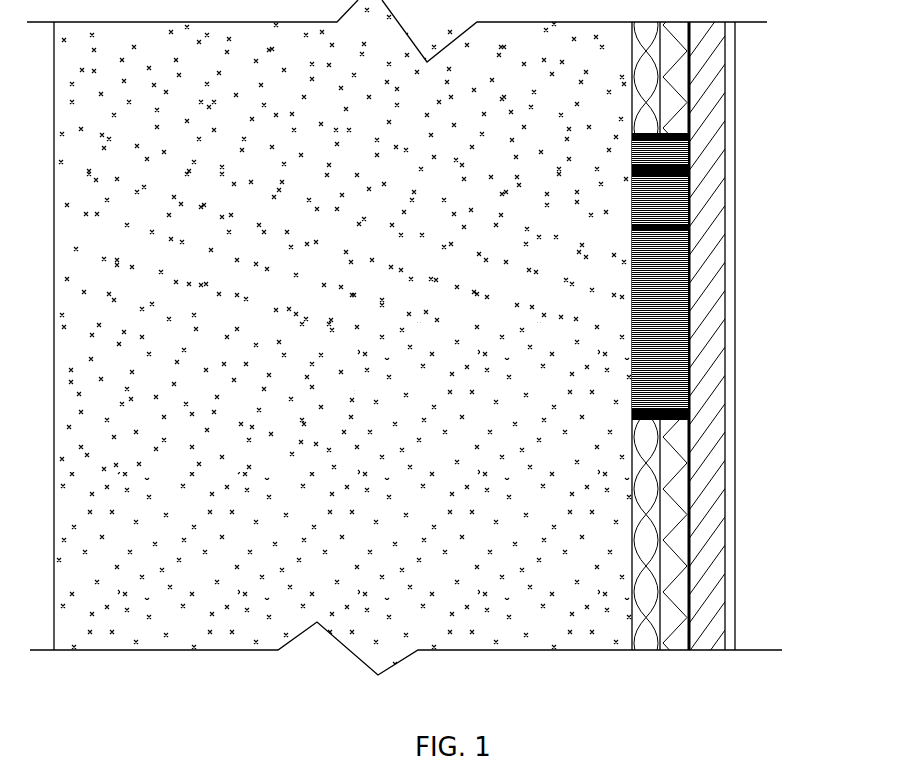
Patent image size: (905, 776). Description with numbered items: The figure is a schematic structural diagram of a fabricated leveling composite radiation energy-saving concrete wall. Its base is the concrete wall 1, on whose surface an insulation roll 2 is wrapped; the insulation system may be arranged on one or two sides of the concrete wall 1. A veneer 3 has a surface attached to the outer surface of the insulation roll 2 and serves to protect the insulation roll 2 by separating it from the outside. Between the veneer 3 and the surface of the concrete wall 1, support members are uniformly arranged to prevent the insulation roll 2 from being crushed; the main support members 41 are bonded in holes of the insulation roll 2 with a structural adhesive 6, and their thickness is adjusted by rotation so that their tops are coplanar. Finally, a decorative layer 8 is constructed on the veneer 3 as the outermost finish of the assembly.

The concrete wall 1 is at (520, 623).
The insulation roll 2 is at (677, 530).
The veneer 3 is at (715, 438).
The structural adhesive 6 is at (688, 168).
The main support member 41 is at (661, 228).
The decorative layer 8 is at (732, 80).